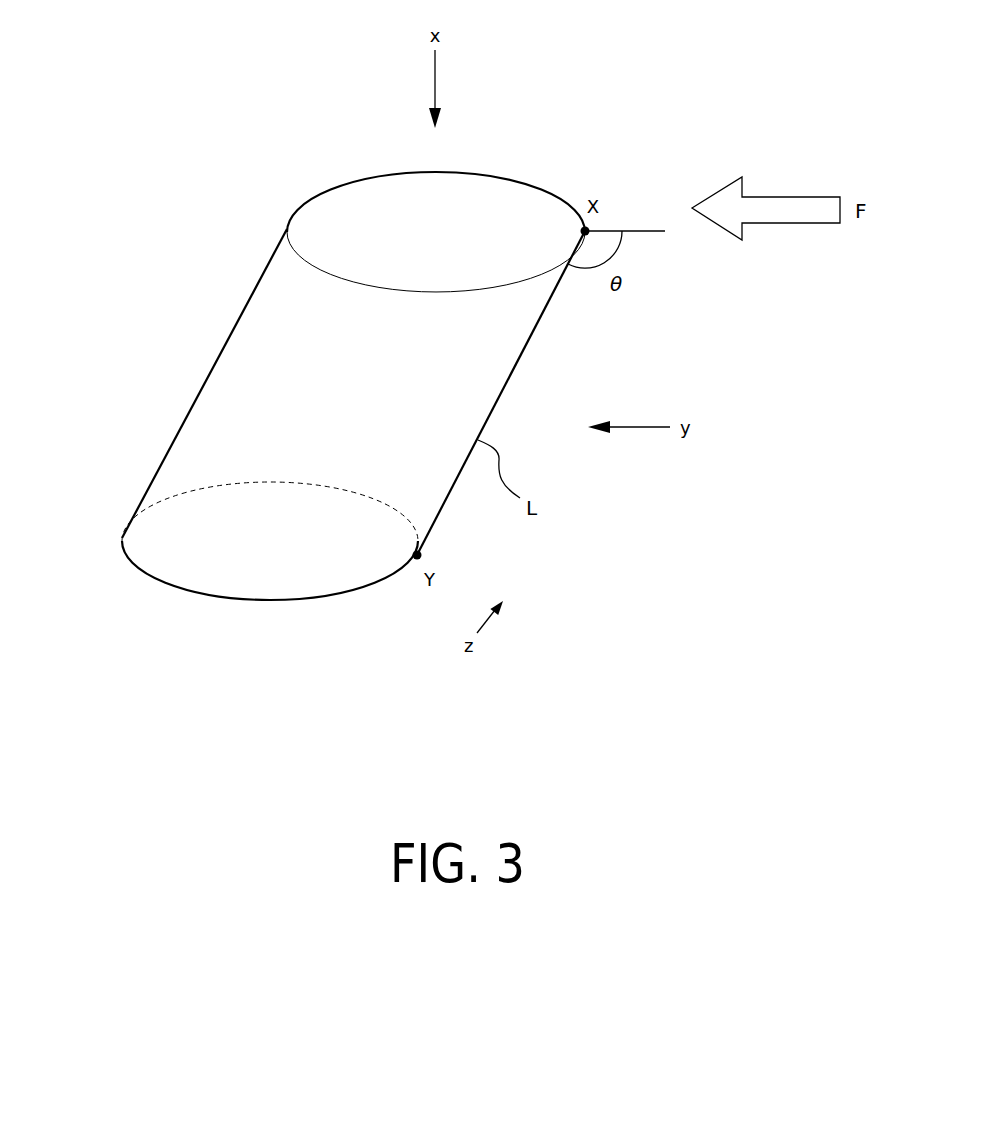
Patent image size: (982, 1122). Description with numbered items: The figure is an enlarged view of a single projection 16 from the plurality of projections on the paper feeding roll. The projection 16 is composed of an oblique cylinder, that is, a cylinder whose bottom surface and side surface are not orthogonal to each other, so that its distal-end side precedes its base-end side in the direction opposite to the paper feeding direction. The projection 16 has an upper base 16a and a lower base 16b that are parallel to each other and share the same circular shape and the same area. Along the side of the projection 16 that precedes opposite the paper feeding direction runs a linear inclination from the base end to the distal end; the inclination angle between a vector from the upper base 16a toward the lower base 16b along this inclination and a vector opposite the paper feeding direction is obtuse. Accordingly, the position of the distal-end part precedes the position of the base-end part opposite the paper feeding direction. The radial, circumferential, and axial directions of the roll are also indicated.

The projection 16 is at (341, 414).
The upper base 16a is at (370, 202).
The lower base 16b is at (175, 543).